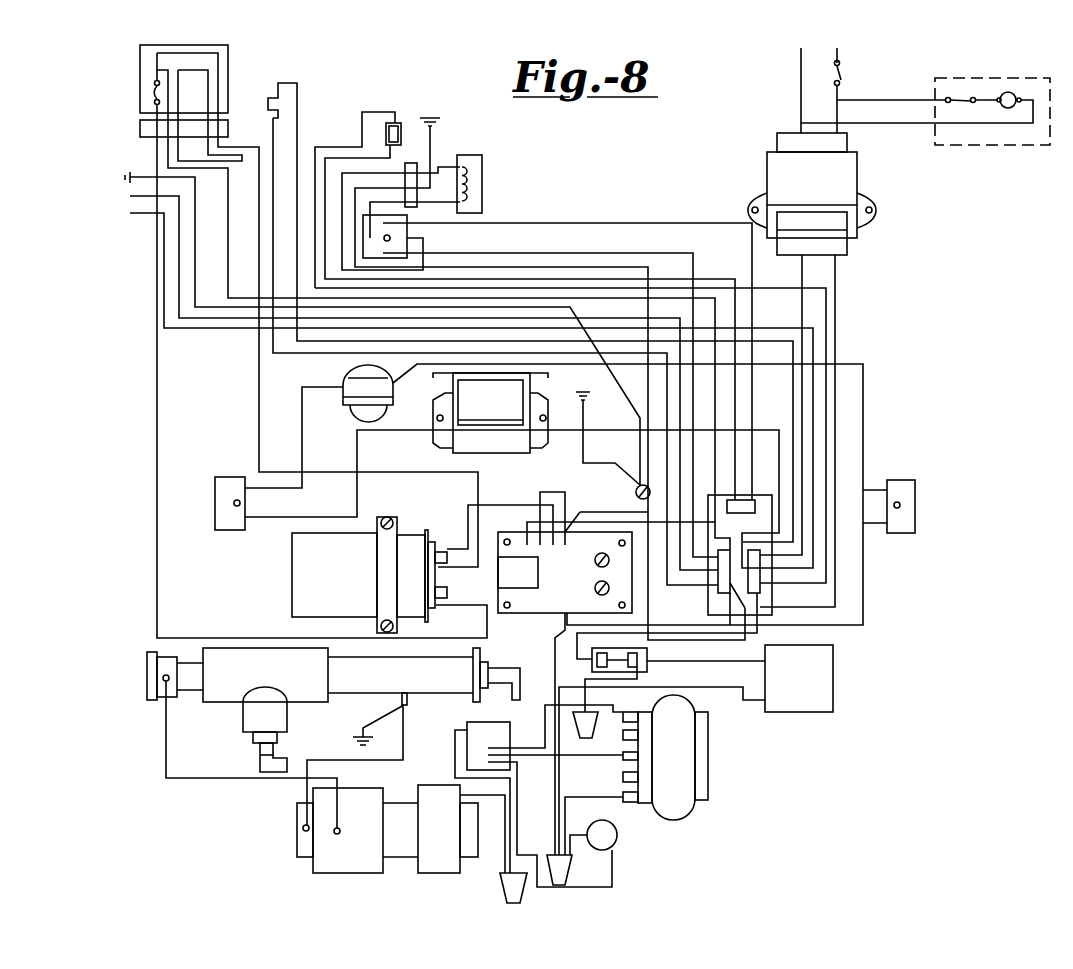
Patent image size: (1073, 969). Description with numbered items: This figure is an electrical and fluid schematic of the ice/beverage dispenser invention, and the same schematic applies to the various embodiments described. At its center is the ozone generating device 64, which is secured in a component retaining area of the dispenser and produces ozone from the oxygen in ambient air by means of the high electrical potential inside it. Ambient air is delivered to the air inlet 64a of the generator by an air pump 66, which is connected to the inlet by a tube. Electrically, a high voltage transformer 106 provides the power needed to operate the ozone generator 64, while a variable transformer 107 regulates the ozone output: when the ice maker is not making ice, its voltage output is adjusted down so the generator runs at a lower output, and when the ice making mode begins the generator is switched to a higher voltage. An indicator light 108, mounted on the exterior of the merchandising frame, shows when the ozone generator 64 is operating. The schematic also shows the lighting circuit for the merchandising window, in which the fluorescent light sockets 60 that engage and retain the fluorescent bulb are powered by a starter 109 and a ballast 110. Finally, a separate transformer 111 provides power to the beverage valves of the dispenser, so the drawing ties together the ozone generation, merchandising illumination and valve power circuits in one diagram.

The electrical sockets 60 is at (215, 503).
The ozone generating device 64 is at (202, 703).
The air inlet 64a is at (260, 766).
The air pump 66 is at (833, 672).
The high voltage transformer 106 is at (313, 868).
The variable transformer 107 is at (708, 771).
The indicator light 108 is at (617, 837).
The starter 109 is at (344, 382).
The ballast 110 is at (487, 453).
The transformer 111 is at (857, 178).